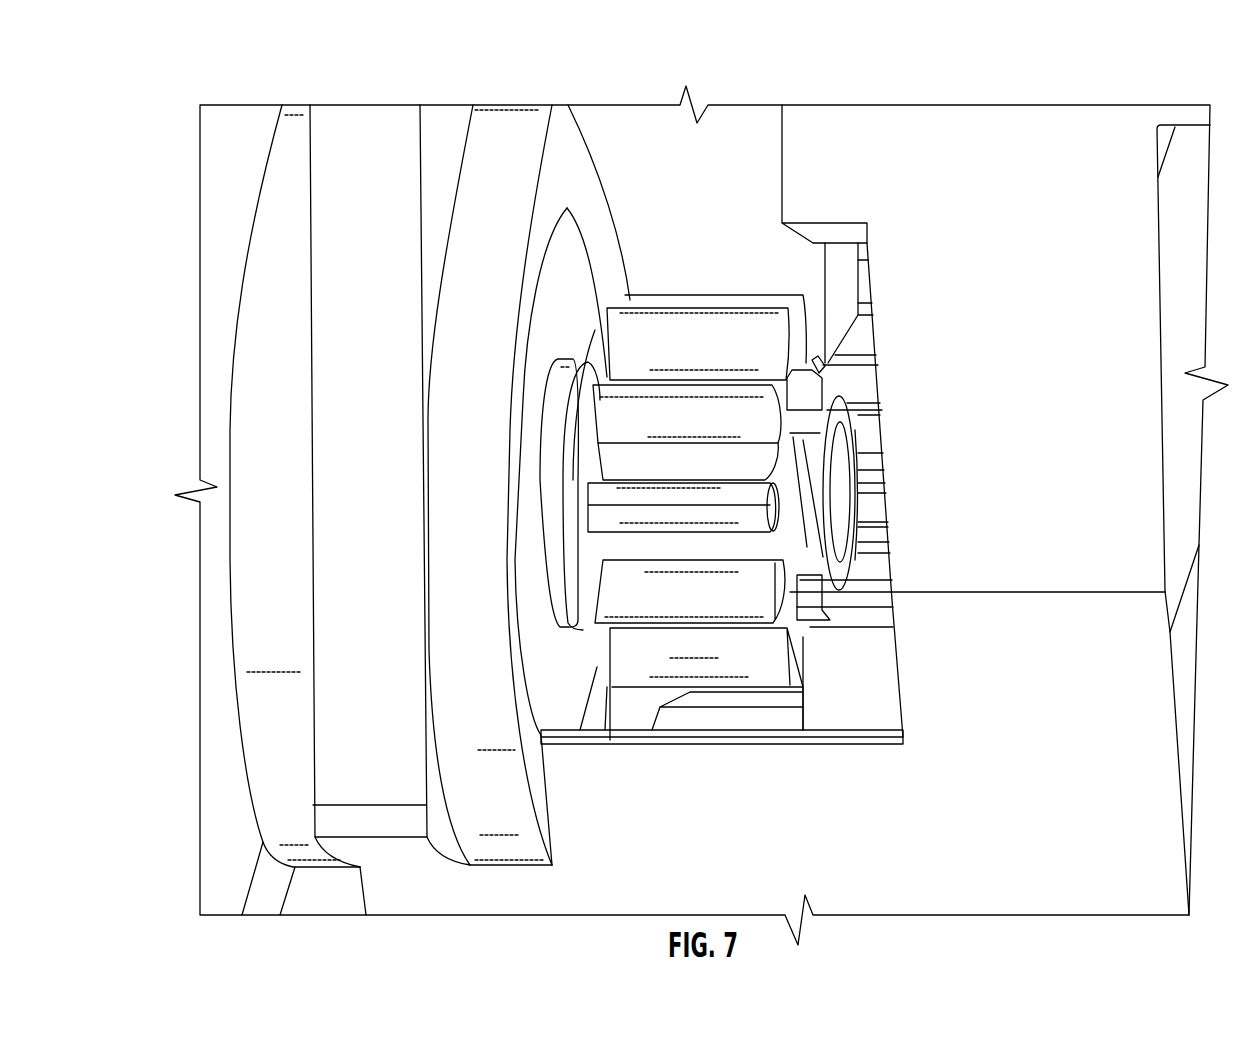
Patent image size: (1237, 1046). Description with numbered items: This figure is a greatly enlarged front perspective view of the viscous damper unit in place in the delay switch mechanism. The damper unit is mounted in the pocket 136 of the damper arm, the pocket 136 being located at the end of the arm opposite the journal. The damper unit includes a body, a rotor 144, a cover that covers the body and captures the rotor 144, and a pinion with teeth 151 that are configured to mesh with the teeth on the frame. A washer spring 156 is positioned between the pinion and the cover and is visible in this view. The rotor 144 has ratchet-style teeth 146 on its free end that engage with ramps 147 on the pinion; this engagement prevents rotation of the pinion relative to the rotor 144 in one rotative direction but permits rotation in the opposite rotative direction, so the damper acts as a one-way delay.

The pocket 136 is at (572, 160).
The washer spring 156 is at (590, 335).
The teeth 151 is at (742, 352).
The ramps 147 is at (807, 395).
The rotor 144 is at (843, 402).
The ratchet-style teeth 146 is at (812, 473).